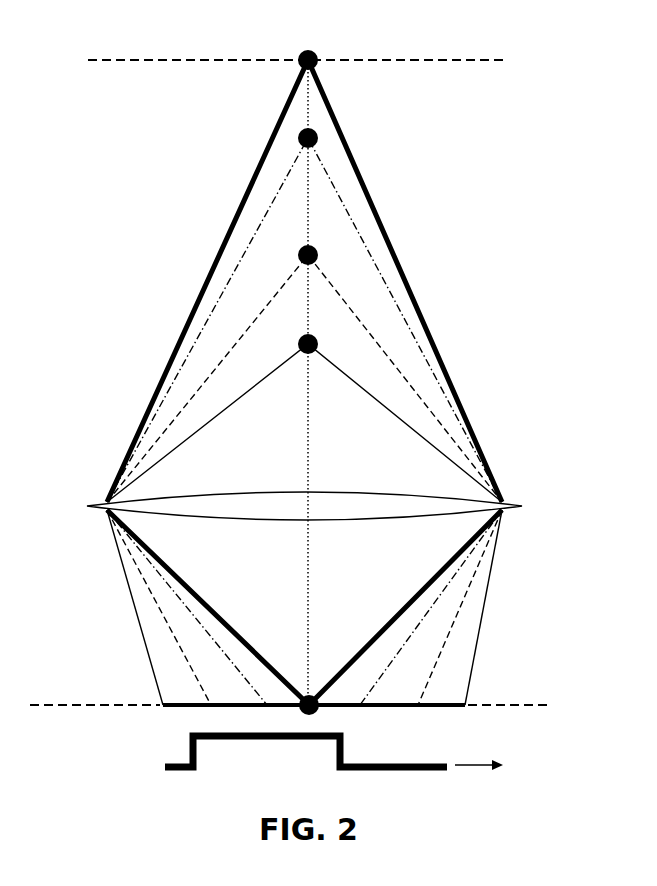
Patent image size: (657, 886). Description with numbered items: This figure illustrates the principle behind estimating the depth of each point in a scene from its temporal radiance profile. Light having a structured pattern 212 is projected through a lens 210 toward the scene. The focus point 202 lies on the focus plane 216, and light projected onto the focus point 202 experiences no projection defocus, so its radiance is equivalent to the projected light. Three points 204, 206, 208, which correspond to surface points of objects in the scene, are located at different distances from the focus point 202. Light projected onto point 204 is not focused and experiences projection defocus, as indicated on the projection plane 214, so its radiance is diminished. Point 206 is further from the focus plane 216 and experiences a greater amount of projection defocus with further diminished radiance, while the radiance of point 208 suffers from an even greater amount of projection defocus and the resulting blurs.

The focus point 202 is at (304, 368).
The point 204 is at (304, 416).
The point 206 is at (309, 475).
The point 208 is at (309, 519).
The lens 210 is at (337, 520).
The structured pattern 212 is at (301, 770).
The projection plane 214 is at (329, 726).
The focus plane 216 is at (323, 80).